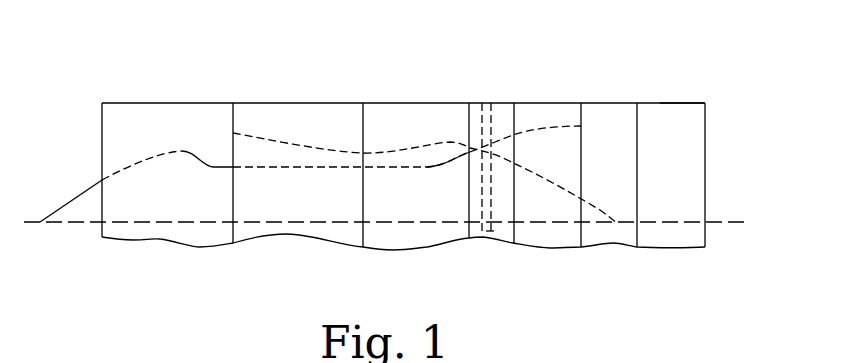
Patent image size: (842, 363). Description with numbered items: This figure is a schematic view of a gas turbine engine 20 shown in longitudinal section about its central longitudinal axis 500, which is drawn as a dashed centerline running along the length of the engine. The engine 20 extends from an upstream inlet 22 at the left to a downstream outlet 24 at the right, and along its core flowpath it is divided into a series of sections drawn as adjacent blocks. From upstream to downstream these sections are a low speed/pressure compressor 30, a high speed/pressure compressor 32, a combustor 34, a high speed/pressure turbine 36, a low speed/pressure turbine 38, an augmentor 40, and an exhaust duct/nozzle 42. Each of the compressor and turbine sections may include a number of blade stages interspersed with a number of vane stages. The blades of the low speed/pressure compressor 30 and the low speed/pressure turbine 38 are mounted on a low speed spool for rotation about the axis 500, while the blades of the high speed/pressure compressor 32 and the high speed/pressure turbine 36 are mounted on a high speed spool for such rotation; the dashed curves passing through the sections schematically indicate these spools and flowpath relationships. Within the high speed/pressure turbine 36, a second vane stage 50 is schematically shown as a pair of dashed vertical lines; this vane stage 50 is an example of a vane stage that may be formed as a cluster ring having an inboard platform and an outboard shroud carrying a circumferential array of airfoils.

The gas turbine engine 20 is at (148, 81).
The upstream inlet 22 is at (84, 146).
The downstream outlet 24 is at (725, 178).
The low speed/pressure compressor (LPC) 30 is at (171, 259).
The high speed/pressure compressor (HPC) 32 is at (298, 257).
The combustor 34 is at (399, 262).
The high speed/pressure turbine (HPT) 36 is at (499, 258).
The low speed/pressure turbine (LPT) 38 is at (565, 260).
The augmentor 40 is at (622, 260).
The exhaust duct/nozzle 42 is at (693, 260).
The second vane stage 50 is at (497, 235).
The central longitudinal axis 500 is at (66, 226).